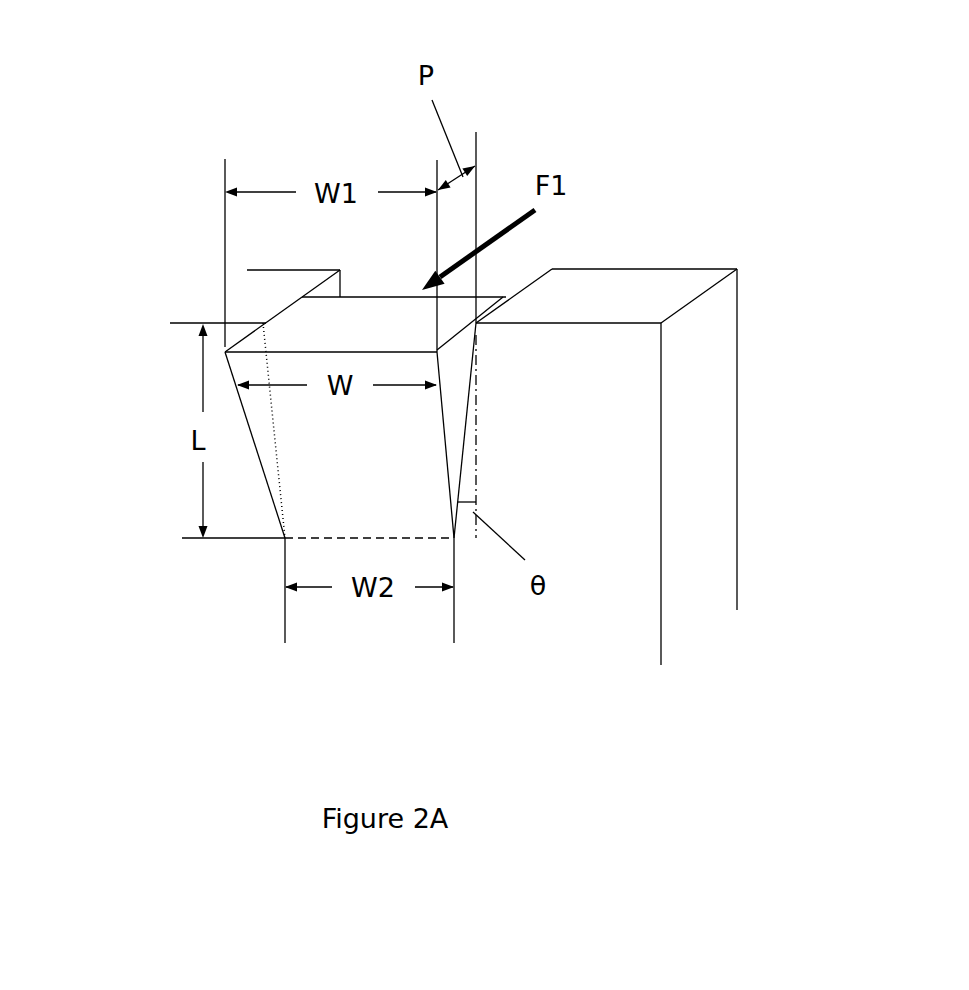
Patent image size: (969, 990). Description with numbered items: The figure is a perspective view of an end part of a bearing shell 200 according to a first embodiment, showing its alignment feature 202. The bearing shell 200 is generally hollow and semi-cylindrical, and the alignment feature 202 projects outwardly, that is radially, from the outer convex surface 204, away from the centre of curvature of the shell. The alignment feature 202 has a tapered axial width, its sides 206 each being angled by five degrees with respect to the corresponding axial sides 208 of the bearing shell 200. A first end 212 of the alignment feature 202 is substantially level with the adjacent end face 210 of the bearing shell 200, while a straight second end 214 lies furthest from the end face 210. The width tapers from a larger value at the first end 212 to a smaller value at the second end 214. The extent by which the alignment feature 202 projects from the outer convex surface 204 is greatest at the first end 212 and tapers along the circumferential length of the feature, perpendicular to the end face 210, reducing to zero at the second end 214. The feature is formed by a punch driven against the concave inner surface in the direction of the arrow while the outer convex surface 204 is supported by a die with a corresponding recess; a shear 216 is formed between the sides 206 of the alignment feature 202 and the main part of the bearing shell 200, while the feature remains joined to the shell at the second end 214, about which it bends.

The bearing shell 200 is at (160, 100).
The alignment feature 202 is at (333, 468).
The outer convex surface 204 is at (572, 525).
The sides 206 is at (453, 378).
The axial sides 208 is at (703, 467).
The end face 210 is at (660, 293).
The first end 212 is at (337, 343).
The second end 214 is at (432, 540).
The shear 216 is at (273, 313).